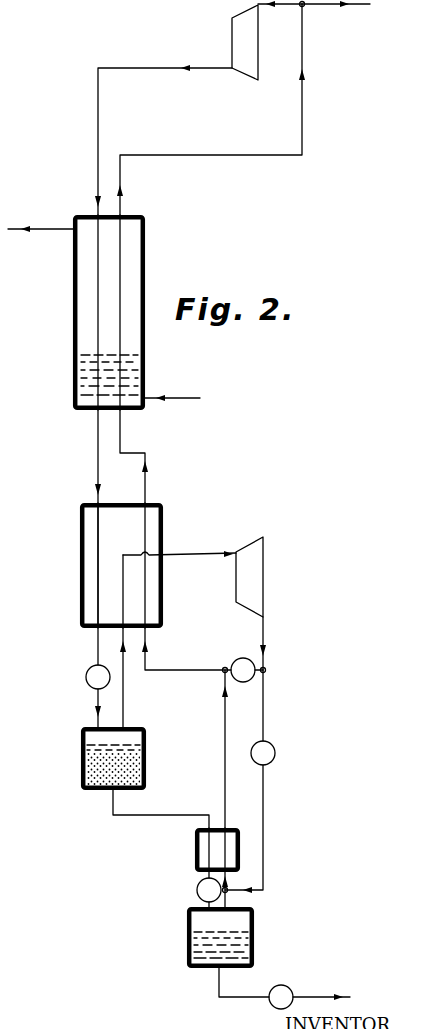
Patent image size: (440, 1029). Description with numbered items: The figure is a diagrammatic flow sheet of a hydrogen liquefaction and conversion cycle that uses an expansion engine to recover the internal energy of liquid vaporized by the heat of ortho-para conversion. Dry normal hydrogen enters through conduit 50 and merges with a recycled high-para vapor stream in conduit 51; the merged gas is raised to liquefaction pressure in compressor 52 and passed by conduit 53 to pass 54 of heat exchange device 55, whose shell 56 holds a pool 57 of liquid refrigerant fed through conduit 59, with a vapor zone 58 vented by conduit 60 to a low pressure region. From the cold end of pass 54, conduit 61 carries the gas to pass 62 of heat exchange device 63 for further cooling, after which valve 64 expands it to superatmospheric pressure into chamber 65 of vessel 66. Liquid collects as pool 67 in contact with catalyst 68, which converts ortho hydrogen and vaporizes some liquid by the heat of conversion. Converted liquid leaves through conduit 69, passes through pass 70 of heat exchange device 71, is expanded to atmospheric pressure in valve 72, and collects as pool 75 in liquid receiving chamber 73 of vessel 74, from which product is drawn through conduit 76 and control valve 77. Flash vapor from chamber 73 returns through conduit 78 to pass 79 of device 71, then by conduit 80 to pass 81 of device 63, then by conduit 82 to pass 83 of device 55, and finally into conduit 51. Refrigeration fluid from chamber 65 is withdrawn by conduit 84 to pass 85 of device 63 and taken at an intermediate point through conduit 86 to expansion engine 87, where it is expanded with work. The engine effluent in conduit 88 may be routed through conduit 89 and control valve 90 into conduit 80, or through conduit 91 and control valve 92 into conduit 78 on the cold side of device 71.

The conduit 50 is at (322, 8).
The conduit 51 is at (303, 50).
The compressor 52 is at (232, 35).
The conduit 53 is at (98, 127).
The pass 54 is at (100, 248).
The heat exchange device 55 is at (150, 258).
The shell 56 is at (146, 349).
The pool of liquid refrigerant 57 is at (146, 368).
The vapor zone 58 is at (82, 264).
The conduit 59 is at (190, 400).
The conduit 60 is at (37, 232).
The conduit 61 is at (97, 468).
The pass 62 is at (98, 515).
The heat exchange device 63 is at (76, 557).
The valve 64 is at (86, 678).
The chamber 65 is at (131, 738).
The vessel 66 is at (82, 736).
The pool 67 is at (84, 749).
The catalyst 68 is at (140, 768).
The conduit 69 is at (112, 808).
The pass 70 is at (195, 847).
The heat exchange device 71 is at (188, 853).
The valve 72 is at (197, 890).
The liquid receiving chamber 73 is at (240, 925).
The vessel 74 is at (187, 922).
The pool 75 is at (245, 945).
The conduit 76 is at (215, 997).
The control valve 77 is at (271, 1009).
The conduit 78 is at (231, 897).
The pass 79 is at (228, 844).
The conduit 80 is at (225, 731).
The pass 81 is at (147, 532).
The conduit 82 is at (148, 478).
The pass 83 is at (121, 292).
The conduit 84 is at (125, 708).
The pass 85 is at (120, 570).
The conduit 86 is at (203, 553).
The expansion engine 87 is at (258, 556).
The conduit 88 is at (265, 637).
The conduit 89 is at (243, 658).
The control valve 90 is at (243, 683).
The conduit 91 is at (265, 712).
The control valve 92 is at (277, 752).